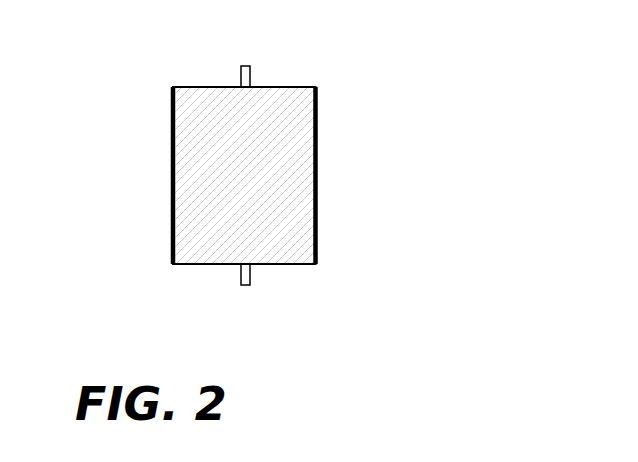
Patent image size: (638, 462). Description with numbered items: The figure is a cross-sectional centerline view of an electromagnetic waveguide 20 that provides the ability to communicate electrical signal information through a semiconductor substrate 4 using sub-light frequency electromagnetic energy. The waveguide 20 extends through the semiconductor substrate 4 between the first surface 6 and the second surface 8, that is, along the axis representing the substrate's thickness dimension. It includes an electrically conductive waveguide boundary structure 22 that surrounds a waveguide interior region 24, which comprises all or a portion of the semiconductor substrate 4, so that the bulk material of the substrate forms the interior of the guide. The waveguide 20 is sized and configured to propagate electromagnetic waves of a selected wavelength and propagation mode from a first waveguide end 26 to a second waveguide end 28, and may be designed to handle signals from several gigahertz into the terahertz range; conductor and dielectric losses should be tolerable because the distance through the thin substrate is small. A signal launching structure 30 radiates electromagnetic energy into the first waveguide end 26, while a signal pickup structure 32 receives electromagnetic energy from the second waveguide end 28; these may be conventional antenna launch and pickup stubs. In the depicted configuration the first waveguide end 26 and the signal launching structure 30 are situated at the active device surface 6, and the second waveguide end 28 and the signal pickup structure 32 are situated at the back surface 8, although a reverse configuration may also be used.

The electromagnetic waveguide 20 is at (113, 79).
The semiconductor substrate 4 is at (183, 173).
The first surface 6 is at (287, 87).
The second surface 8 is at (195, 267).
The waveguide boundary structure 22 is at (316, 183).
The waveguide interior region 24 is at (297, 145).
The first waveguide end 26 is at (200, 71).
The second waveguide end 28 is at (300, 275).
The signal launching structure 30 is at (243, 65).
The signal pickup structure 32 is at (245, 287).